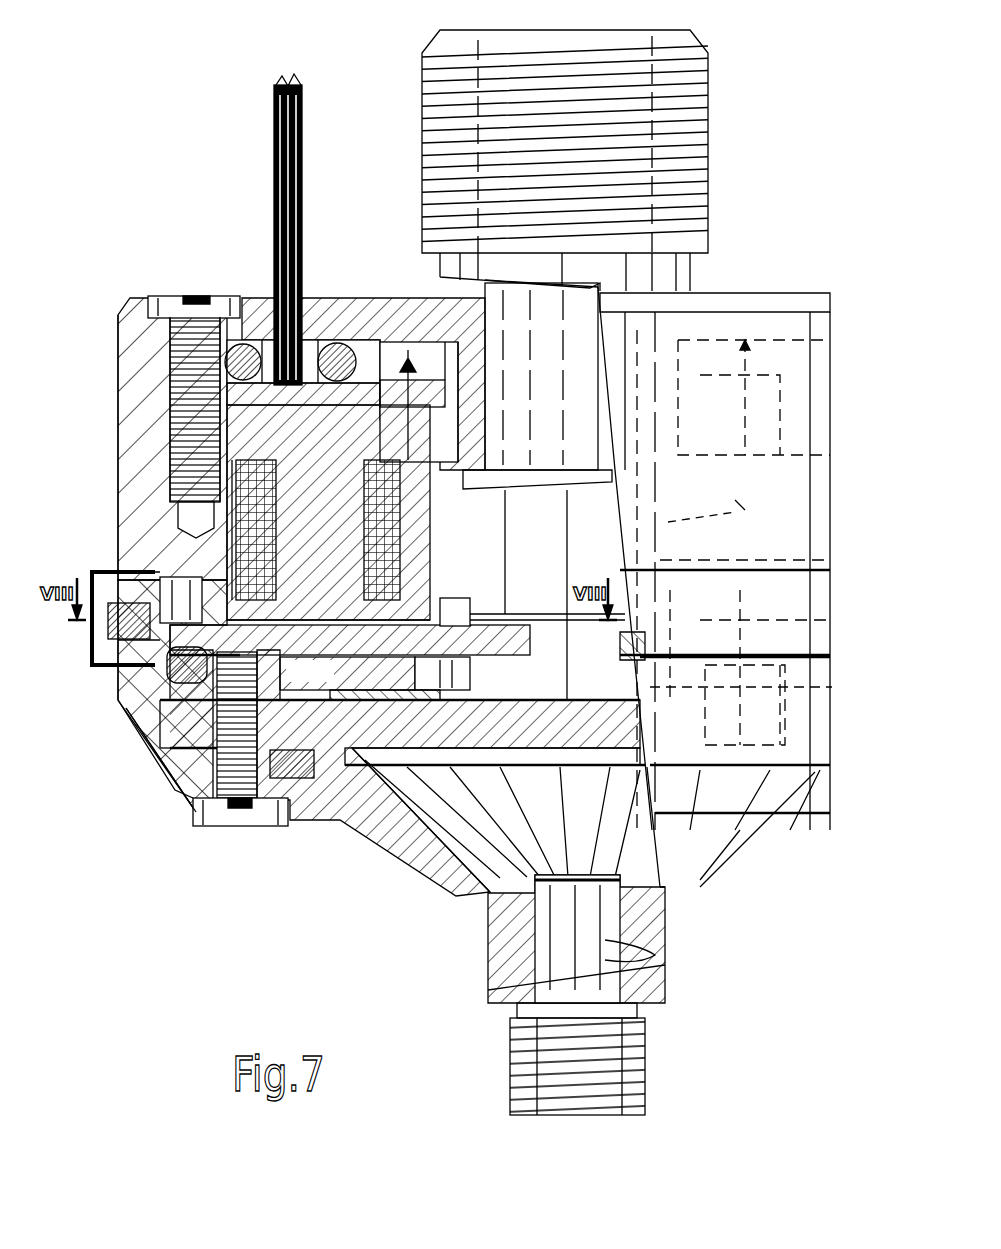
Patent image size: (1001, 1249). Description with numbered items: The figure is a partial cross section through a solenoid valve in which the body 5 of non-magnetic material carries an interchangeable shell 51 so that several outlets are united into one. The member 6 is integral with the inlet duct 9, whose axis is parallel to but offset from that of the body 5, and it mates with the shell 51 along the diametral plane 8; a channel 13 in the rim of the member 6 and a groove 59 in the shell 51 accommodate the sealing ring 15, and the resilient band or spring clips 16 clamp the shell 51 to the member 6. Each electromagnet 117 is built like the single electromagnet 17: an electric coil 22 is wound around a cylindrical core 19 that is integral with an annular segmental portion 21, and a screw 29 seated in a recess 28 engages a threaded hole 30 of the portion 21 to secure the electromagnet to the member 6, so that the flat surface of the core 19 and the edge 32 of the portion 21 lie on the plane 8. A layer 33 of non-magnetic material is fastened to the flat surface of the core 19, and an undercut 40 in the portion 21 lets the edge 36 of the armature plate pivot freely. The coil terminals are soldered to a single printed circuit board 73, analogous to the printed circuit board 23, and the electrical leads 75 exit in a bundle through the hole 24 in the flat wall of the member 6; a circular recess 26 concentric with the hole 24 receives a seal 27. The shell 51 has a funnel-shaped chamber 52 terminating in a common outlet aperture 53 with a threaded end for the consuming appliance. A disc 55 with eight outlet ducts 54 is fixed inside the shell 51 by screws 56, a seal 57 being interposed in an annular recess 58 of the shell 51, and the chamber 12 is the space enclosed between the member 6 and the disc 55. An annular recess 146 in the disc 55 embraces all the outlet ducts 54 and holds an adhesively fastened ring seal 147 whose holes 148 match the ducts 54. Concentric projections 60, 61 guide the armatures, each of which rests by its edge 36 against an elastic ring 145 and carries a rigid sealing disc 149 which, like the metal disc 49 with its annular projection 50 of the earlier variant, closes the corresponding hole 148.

The body 5 is at (112, 504).
The member 6 is at (130, 356).
The diametral plane 8 is at (530, 613).
The inlet duct 9 is at (700, 266).
The chamber 12 is at (572, 558).
The channel 13 is at (152, 602).
The sealing ring 15 is at (128, 642).
The spring clips 16 is at (94, 660).
The electromagnet 17 is at (395, 542).
The cylindrical core 19 is at (362, 548).
The annular segmental portion 21 is at (175, 518).
The electric coil 22 is at (380, 512).
The printed circuit board 23 is at (826, 399).
The hole 24 is at (268, 310).
The circular recess 26 is at (352, 346).
The seal 27 is at (315, 346).
The recess 28 is at (150, 300).
The screw 29 is at (180, 297).
The threaded hole 30 is at (175, 488).
The edge 32 is at (125, 588).
The layer of non-magnetic material 33 is at (372, 592).
The edge 36 is at (160, 706).
The undercut 40 is at (205, 577).
The metal disc 49 is at (836, 656).
The annular projection 50 is at (470, 630).
The interchangeable shell 51 is at (390, 845).
The funnel-shaped chamber 52 is at (468, 820).
The common outlet aperture 53 is at (650, 1040).
The outlet ducts 54 is at (352, 780).
The disc 55 is at (607, 770).
The screws 56 is at (220, 830).
The seal 57 is at (172, 806).
The annular recess 58 is at (306, 782).
The groove 59 is at (170, 672).
The concentric projections 60 is at (165, 746).
The concentric projections 61 is at (466, 604).
The printed circuit board 73 is at (390, 360).
The electrical leads 75 is at (274, 180).
The electromagnets 117 is at (691, 507).
The ring of elastic material 145 is at (172, 722).
The annular recess 146 is at (476, 702).
The ring seal 147 is at (156, 792).
The holes 148 is at (463, 673).
The sealing disc 149 is at (348, 670).